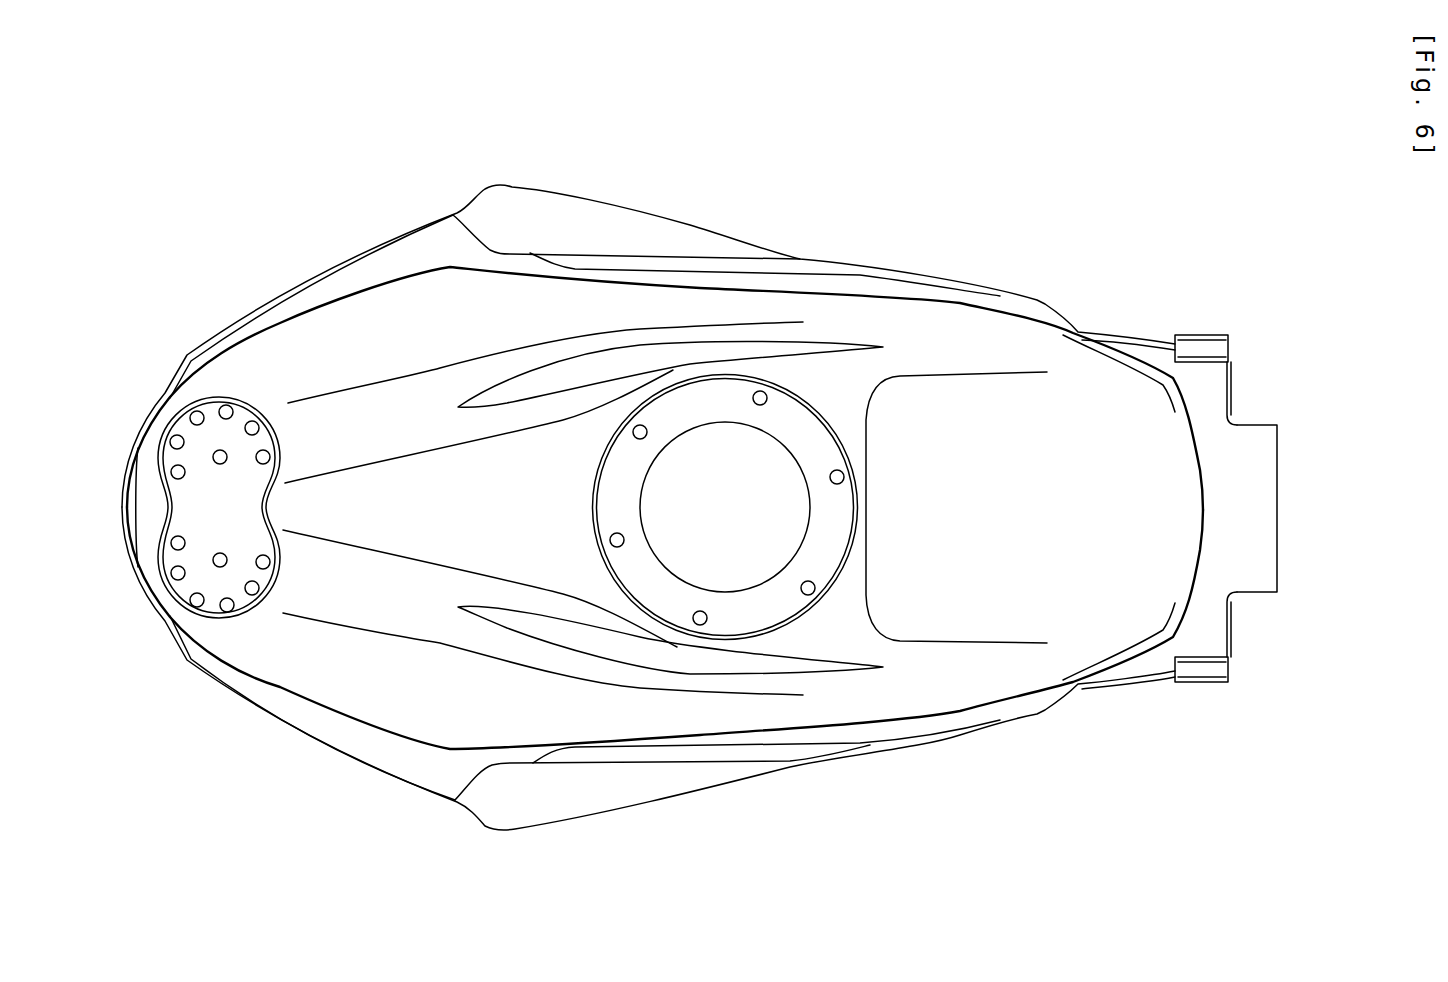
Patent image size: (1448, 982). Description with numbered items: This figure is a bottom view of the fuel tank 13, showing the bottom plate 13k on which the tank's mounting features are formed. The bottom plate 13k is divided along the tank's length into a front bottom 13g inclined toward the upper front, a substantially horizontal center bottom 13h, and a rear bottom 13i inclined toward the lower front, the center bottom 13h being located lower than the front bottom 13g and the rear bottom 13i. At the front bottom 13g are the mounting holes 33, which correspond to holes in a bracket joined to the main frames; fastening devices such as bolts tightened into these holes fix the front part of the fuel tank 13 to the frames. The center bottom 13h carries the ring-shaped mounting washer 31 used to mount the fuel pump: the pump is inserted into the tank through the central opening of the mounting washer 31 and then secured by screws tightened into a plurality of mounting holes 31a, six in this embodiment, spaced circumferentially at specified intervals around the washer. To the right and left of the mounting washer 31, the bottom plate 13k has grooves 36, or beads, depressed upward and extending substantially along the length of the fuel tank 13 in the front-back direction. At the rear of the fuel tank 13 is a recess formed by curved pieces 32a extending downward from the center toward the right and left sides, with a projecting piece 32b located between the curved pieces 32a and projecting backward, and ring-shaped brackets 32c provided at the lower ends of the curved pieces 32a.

The fuel tank 13 is at (812, 213).
The bottom plate 13k is at (328, 340).
The front bottom 13g is at (320, 695).
The center bottom 13h is at (713, 713).
The rear bottom 13i is at (1040, 622).
The grooves (beads) 36 is at (820, 350).
The mounting washer 31 is at (613, 503).
The mounting holes 31a is at (633, 435).
The mounting holes 33 is at (219, 456).
The curved pieces 32a is at (1210, 393).
The projecting piece 32b is at (1263, 498).
The ring-shaped brackets 32c is at (1198, 352).